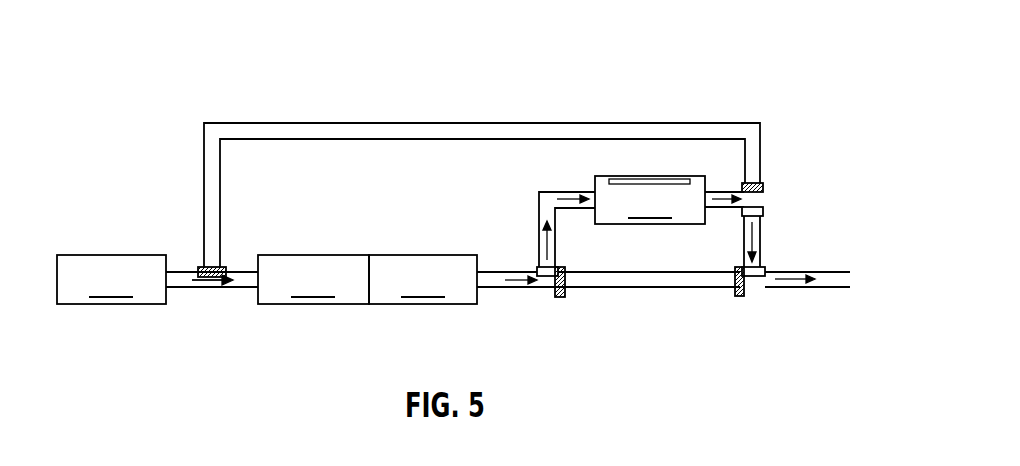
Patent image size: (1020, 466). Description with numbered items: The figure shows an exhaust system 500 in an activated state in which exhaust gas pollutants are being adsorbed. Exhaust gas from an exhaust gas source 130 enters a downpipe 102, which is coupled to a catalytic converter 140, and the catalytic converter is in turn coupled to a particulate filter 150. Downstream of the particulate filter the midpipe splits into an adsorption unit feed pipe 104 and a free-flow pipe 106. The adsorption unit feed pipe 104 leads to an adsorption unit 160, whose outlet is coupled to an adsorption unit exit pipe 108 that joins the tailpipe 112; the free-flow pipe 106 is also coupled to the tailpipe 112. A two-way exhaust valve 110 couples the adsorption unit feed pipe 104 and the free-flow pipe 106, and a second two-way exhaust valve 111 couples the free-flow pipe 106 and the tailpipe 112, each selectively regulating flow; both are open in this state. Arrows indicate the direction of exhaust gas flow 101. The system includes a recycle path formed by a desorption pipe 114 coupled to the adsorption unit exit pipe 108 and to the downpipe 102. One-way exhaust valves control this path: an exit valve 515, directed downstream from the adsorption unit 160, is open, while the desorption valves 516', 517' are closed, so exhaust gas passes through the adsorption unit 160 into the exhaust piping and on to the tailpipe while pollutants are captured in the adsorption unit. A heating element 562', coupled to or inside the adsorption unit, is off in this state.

The system 500 is at (172, 40).
The direction of exhaust gas flow 101 is at (216, 284).
The downpipe 102 is at (242, 271).
The adsorption unit feed pipe 104 is at (542, 192).
The free-flow pipe 106 is at (690, 289).
The adsorption unit exit pipe 108 is at (762, 237).
The two-way exhaust valve 110 is at (538, 267).
The two-way exhaust valve 111 is at (761, 267).
The tailpipe 112 is at (802, 290).
The desorption pipe 114 is at (270, 123).
The exhaust gas source 130 is at (111, 279).
The catalytic converter 140 is at (313, 279).
The particulate filter 150 is at (423, 279).
The adsorption unit 160 is at (650, 200).
The exit valve 515 is at (761, 198).
The desorption valve 516' is at (796, 161).
The desorption valve 517' is at (167, 245).
The heating element 562' is at (615, 164).